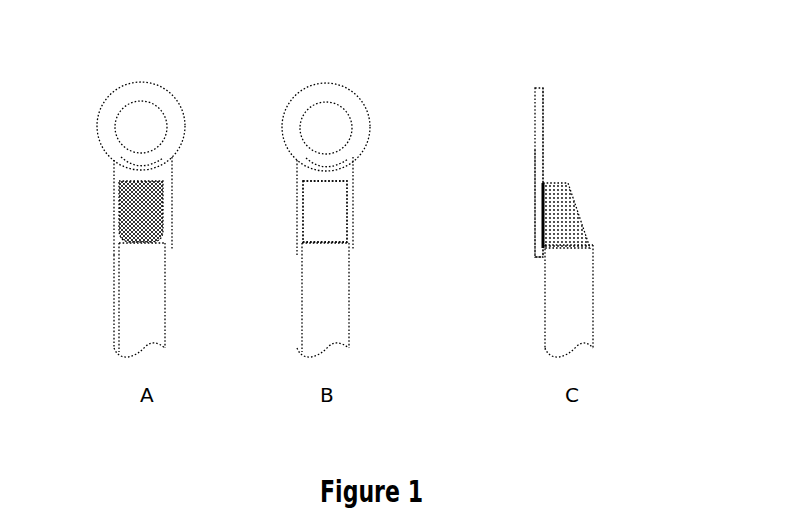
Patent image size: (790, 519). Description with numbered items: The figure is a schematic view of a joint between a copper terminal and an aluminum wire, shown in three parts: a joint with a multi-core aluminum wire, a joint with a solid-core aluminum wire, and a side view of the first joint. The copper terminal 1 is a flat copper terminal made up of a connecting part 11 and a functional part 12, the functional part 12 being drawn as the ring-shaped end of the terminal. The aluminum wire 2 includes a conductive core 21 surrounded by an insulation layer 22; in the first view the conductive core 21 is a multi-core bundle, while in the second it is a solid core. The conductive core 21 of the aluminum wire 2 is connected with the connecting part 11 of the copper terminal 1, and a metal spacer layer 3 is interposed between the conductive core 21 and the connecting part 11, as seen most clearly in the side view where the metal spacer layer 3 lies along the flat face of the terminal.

The copper terminal 1 is at (143, 93).
The functional part 12 is at (174, 115).
The connecting part 11 is at (153, 170).
The conductive core 21 is at (141, 200).
The metal spacer layer 3 is at (166, 228).
The insulation layer 22 is at (153, 283).
The aluminum wire 2 is at (154, 322).